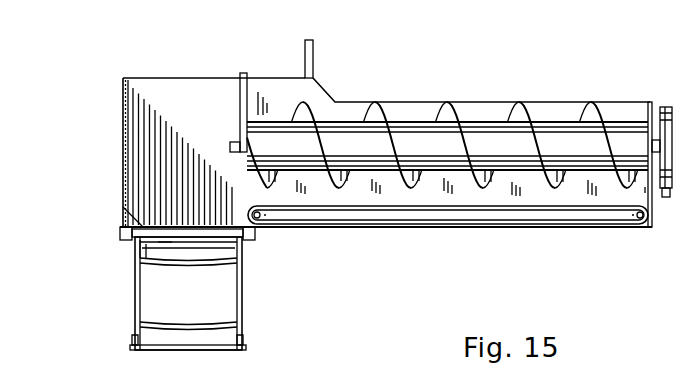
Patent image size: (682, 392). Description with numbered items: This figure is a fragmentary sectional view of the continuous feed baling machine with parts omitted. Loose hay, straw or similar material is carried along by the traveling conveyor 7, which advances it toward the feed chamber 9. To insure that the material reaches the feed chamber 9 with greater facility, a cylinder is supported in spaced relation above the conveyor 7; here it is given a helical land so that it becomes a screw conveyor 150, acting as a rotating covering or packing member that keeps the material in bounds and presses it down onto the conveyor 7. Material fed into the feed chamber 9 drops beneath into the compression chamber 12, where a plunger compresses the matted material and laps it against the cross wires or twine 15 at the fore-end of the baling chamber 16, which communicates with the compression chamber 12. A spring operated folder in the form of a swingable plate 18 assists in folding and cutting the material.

The feed chamber 9 is at (386, 152).
The screw conveyor 150 is at (518, 112).
The conveyor 7 is at (550, 208).
The compression chamber 12 is at (188, 293).
The baling chamber 16 is at (188, 278).
The cross wires or twine 15 is at (227, 322).
The swingable plate 18 is at (153, 242).